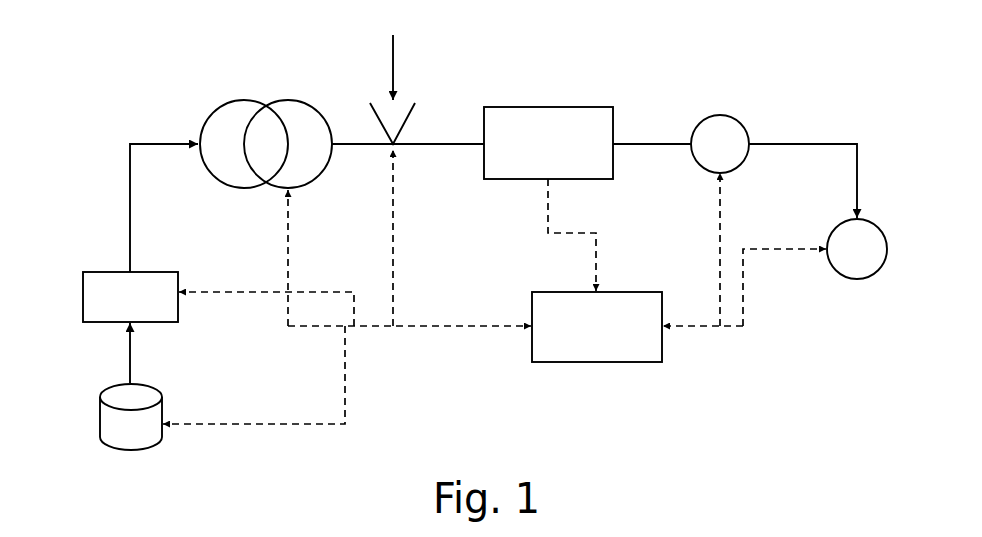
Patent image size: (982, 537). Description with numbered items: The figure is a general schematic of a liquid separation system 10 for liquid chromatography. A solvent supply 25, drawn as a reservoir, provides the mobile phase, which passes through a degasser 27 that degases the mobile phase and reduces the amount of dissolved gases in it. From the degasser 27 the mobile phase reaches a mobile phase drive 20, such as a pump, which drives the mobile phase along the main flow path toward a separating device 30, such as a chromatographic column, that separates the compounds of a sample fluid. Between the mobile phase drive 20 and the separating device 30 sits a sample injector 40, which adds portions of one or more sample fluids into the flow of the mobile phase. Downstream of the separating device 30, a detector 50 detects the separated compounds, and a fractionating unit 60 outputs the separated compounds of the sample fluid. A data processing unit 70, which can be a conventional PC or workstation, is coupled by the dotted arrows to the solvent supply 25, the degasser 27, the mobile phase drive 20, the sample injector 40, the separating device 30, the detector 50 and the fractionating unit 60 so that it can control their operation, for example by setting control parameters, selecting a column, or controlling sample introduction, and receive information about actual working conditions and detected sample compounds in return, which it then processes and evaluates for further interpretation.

The liquid separation system 10 is at (741, 381).
The mobile phase drive 20 is at (265, 116).
The solvent supply 25 is at (118, 450).
The degasser 27 is at (102, 323).
The separating device 30 is at (560, 117).
The sample injector 40 is at (410, 108).
The detector 50 is at (735, 116).
The fractionating unit 60 is at (868, 222).
The data processing unit 70 is at (593, 363).